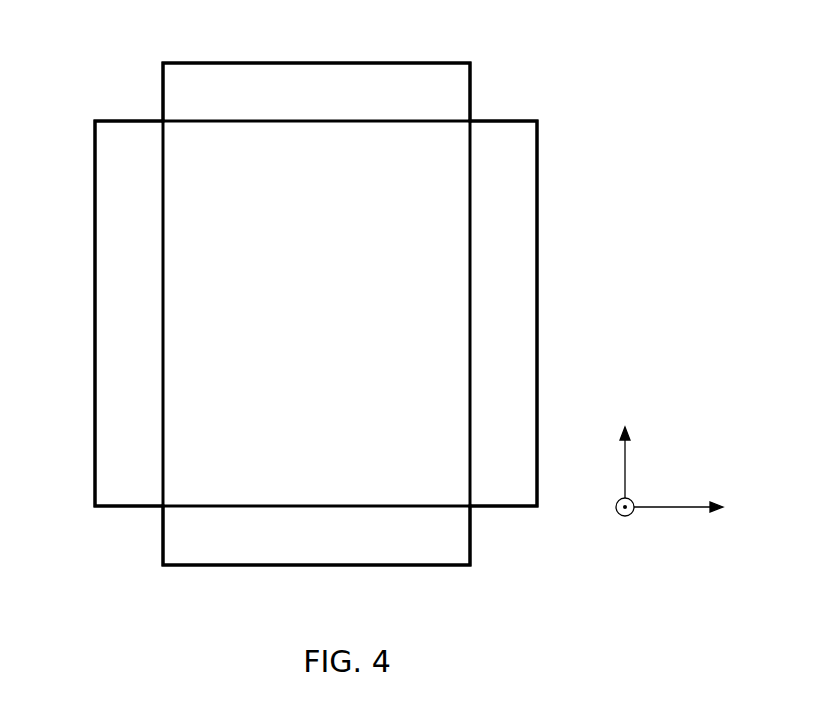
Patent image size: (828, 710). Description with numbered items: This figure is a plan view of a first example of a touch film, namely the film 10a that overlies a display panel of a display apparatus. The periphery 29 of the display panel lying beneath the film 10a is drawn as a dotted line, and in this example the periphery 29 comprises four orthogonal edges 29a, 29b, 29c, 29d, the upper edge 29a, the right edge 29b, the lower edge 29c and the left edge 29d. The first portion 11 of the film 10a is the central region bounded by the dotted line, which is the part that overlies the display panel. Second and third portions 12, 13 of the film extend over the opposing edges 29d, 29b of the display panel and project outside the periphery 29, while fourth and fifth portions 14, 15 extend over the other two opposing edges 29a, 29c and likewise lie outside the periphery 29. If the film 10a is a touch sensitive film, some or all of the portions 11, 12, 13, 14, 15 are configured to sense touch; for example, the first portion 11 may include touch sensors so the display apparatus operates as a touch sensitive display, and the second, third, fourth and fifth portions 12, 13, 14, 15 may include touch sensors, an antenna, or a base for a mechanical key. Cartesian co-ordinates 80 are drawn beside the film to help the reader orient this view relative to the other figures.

The film 10a is at (316, 313).
The first portion 11 is at (450, 155).
The second portion 12 is at (123, 318).
The third portion 13 is at (515, 327).
The fourth portion 14 is at (387, 90).
The fifth portion 15 is at (393, 548).
The periphery 29 is at (422, 120).
The edge 29a is at (277, 120).
The edge 29b is at (470, 198).
The edge 29c is at (292, 508).
The edge 29d is at (163, 215).
The Cartesian co-ordinates 80 is at (663, 528).